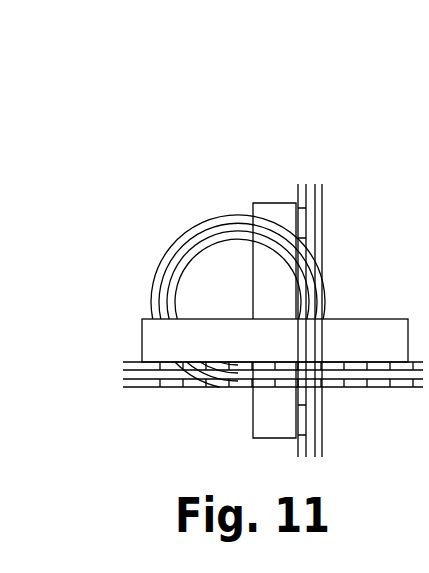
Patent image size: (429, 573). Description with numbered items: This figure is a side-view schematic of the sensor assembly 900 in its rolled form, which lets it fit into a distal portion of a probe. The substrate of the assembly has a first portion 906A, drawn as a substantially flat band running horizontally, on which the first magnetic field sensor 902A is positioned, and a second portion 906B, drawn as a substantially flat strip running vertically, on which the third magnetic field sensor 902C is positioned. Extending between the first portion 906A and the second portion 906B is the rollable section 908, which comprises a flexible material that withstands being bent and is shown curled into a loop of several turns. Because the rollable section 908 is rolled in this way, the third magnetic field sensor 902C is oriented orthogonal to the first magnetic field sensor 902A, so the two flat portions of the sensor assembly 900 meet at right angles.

The sensor assembly 900 is at (170, 103).
The first magnetic field sensor 902A is at (384, 327).
The third magnetic field sensor 902C is at (275, 212).
The first portion 906A is at (174, 390).
The second portion 906B is at (323, 206).
The rollable section 908 is at (188, 238).